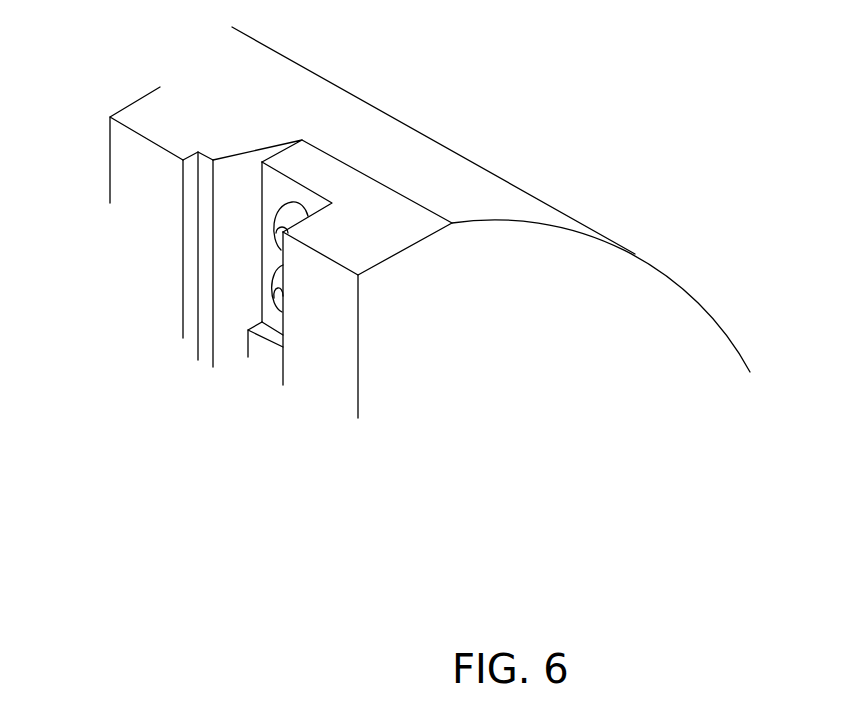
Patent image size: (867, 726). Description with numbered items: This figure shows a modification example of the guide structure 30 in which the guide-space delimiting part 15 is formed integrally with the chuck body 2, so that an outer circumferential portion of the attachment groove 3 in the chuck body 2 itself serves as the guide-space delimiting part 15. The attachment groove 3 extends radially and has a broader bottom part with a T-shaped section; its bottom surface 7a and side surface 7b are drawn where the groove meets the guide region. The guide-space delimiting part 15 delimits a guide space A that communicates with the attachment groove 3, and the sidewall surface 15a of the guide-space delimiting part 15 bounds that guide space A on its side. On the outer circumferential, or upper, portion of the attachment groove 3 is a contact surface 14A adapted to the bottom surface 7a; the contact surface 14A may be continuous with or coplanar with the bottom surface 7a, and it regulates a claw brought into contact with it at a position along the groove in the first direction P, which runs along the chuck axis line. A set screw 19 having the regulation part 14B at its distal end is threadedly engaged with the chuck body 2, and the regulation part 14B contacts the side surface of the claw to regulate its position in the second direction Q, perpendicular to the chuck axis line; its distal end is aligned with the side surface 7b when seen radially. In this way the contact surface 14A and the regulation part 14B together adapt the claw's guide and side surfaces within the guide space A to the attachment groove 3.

The chuck body 2 is at (588, 230).
The attachment groove 3 is at (355, 430).
The bottom surface 7a is at (212, 362).
The side surface 7b is at (263, 362).
The contact surface 14A is at (236, 157).
The regulation part 14B is at (189, 265).
The guide-space delimiting part 15 is at (367, 137).
The sidewall surface 15a is at (287, 190).
The set screw 19 is at (277, 233).
The guide structure 30 is at (357, 120).
The guide space A is at (205, 390).
The first direction P is at (493, 570).
The second direction Q is at (628, 517).